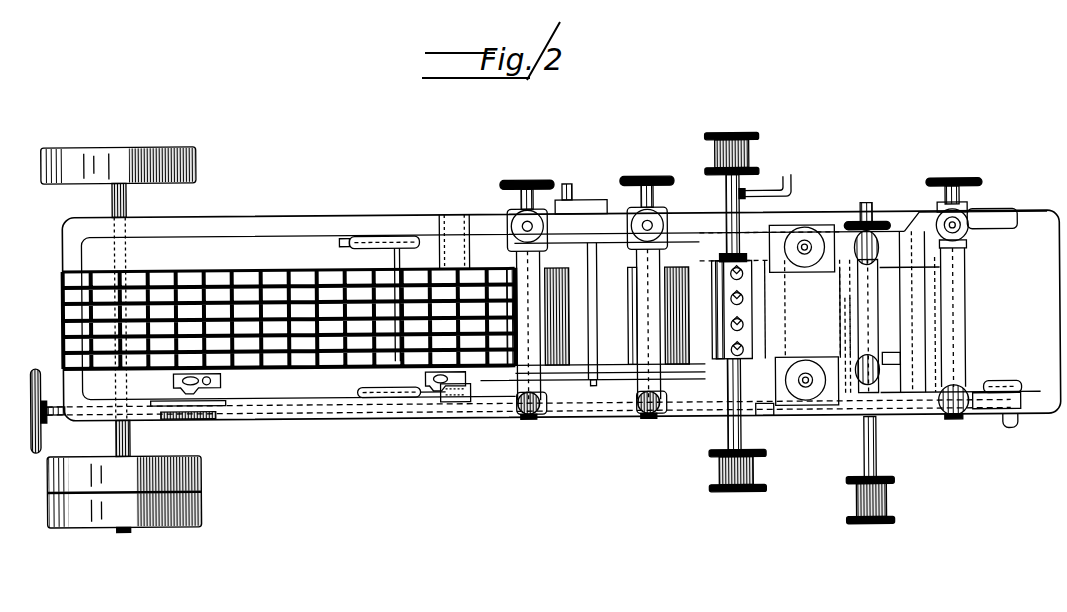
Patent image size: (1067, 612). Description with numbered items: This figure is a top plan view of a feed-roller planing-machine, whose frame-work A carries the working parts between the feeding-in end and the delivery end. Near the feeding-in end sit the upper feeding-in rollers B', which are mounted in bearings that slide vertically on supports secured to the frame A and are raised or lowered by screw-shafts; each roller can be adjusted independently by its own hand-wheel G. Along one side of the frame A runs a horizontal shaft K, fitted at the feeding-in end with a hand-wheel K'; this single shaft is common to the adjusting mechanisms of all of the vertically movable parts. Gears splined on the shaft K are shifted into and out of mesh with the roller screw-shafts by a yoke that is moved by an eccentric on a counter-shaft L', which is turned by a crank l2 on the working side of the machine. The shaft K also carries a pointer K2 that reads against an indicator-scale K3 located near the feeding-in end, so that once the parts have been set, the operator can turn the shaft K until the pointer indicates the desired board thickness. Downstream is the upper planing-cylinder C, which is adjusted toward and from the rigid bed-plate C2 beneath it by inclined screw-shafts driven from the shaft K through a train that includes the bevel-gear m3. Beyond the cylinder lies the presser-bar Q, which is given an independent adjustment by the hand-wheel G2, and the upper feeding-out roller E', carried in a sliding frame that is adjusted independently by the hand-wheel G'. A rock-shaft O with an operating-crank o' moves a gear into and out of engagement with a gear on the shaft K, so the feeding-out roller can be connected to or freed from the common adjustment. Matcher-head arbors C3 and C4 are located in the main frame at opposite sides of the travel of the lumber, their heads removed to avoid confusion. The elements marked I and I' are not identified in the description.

The frame-work A is at (846, 411).
The hand-wheel K' is at (33, 406).
The horizontal shaft K is at (529, 430).
The pointer K2 is at (225, 412).
The indicator-scale K3 is at (198, 417).
The cylinder rod I' is at (392, 324).
The guide block I is at (448, 323).
The hand-wheel G is at (595, 275).
The crank l2 is at (575, 200).
The counter-shaft L' is at (595, 314).
The upper feeding-in roller B' is at (601, 424).
The upper planing-cylinder C is at (714, 264).
The bed-plate C2 is at (767, 352).
The arbor C3 is at (810, 385).
The arbor C4 is at (805, 227).
The bevel-gear m3 is at (768, 194).
The presser-bar Q is at (855, 318).
The hand-wheel G2 is at (862, 225).
The hand-wheel G' is at (941, 279).
The rock-shaft O is at (955, 423).
The operating-crank o' is at (998, 418).
The upper feeding-out roller E' is at (963, 300).